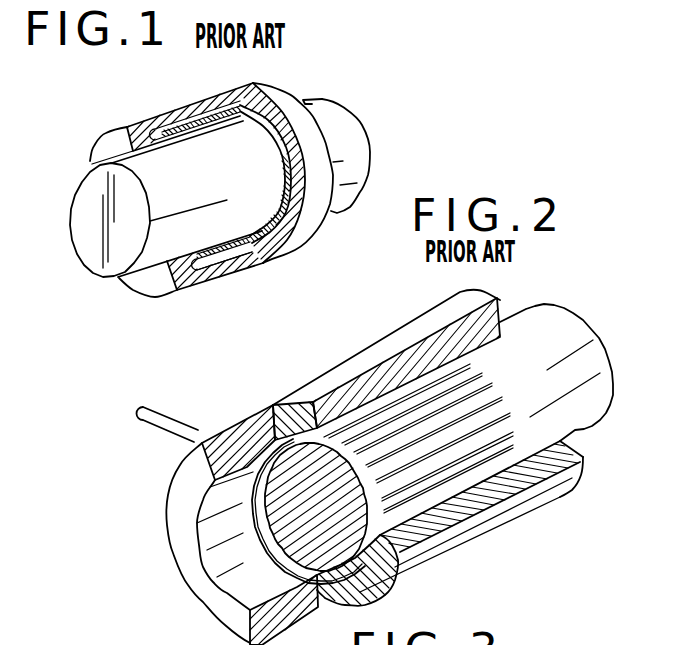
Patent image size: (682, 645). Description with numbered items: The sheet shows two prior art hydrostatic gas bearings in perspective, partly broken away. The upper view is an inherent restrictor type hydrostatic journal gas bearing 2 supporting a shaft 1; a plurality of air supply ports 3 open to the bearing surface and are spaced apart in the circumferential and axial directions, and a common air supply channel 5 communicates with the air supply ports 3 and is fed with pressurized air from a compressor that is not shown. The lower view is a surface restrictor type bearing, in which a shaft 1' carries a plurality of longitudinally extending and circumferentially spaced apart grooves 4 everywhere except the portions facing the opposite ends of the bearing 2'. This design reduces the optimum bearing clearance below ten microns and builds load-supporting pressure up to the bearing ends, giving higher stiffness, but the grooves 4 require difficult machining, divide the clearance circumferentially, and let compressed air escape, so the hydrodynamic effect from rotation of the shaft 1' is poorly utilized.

In FIG. 1, the shaft 1 is at (220, 188).
In FIG. 1, the hydrostatic journal gas bearing 2 is at (211, 207).
In FIG. 1, the air supply ports 3 is at (278, 117).
In FIG. 1, the common air supply channel 5 is at (257, 268).
In FIG. 2, the shaft 1' is at (454, 437).
In FIG. 2, the bearing 2' is at (360, 467).
In FIG. 2, the longitudinal grooves 4 is at (460, 478).